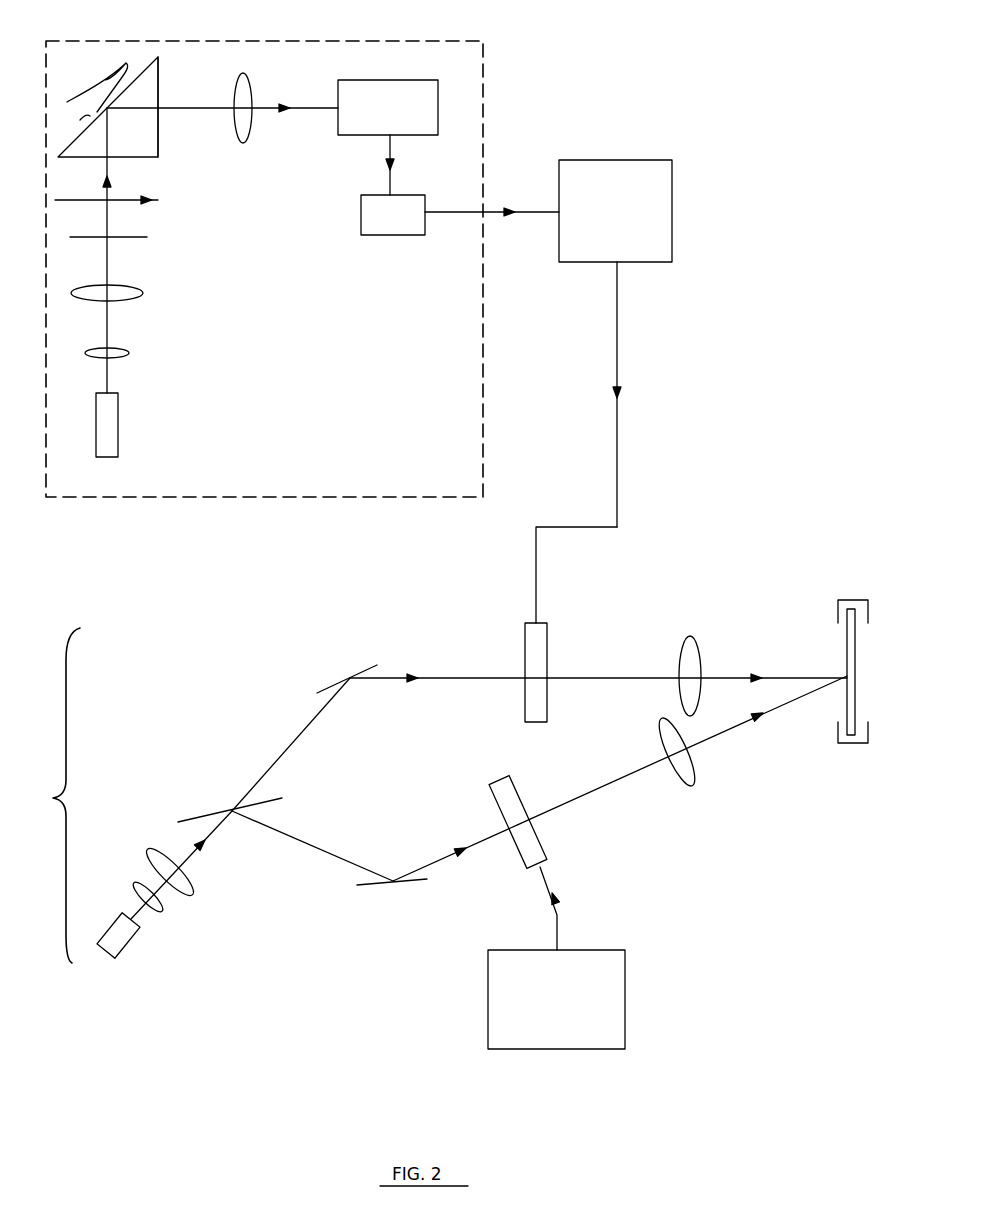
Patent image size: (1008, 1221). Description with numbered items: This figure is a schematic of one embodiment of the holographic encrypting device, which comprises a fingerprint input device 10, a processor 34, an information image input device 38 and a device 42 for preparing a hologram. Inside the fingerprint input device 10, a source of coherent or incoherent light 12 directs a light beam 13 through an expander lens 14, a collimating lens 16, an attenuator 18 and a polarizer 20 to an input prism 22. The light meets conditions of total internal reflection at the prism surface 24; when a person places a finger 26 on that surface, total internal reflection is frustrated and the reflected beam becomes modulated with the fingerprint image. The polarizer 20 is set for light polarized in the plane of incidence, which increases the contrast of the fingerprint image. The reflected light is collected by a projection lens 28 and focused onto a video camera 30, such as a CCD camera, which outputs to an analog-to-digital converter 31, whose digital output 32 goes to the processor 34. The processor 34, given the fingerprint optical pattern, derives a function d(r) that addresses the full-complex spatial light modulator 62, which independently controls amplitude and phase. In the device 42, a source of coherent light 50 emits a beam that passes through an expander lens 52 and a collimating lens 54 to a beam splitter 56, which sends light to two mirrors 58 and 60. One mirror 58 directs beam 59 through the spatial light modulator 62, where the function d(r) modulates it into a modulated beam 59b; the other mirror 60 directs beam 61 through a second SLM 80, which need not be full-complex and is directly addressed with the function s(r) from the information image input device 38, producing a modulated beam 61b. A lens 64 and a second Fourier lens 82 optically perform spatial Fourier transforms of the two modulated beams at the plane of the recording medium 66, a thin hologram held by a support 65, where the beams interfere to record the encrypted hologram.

The fingerprint input device 10 is at (265, 42).
The source of coherent or incoherent light 12 is at (121, 425).
The light beam 13 is at (112, 376).
The expander lens 14 is at (121, 344).
The collimating lens 16 is at (119, 290).
The attenuator 18 is at (148, 243).
The polarizer 20 is at (150, 195).
The input prism 22 is at (152, 160).
The prism surface 24 is at (150, 57).
The finger 26 is at (104, 80).
The projection lens 28 is at (222, 120).
The video camera 30 is at (388, 97).
The analog-to-digital converter 31 is at (358, 228).
The digital output 32 is at (540, 210).
The processor 34 is at (615, 329).
The information image input device 38 is at (628, 1012).
The device for preparing a hologram 42 is at (52, 795).
The source of coherent light 50 is at (125, 958).
The expander lens 52 is at (162, 895).
The collimating lens 54 is at (190, 874).
The beam splitter 56 is at (212, 811).
The mirror 58 is at (336, 677).
The beam 59 is at (398, 676).
The modulated beam 59b is at (630, 677).
The mirror 60 is at (329, 860).
The beam 61 is at (443, 843).
The modulated beam 61b is at (574, 805).
The spatial light modulator 62 is at (524, 622).
The lens 64 is at (680, 637).
The support 65 is at (860, 746).
The recording medium 66 is at (860, 658).
The second SLM 80 is at (500, 778).
The second Fourier lens 82 is at (679, 760).